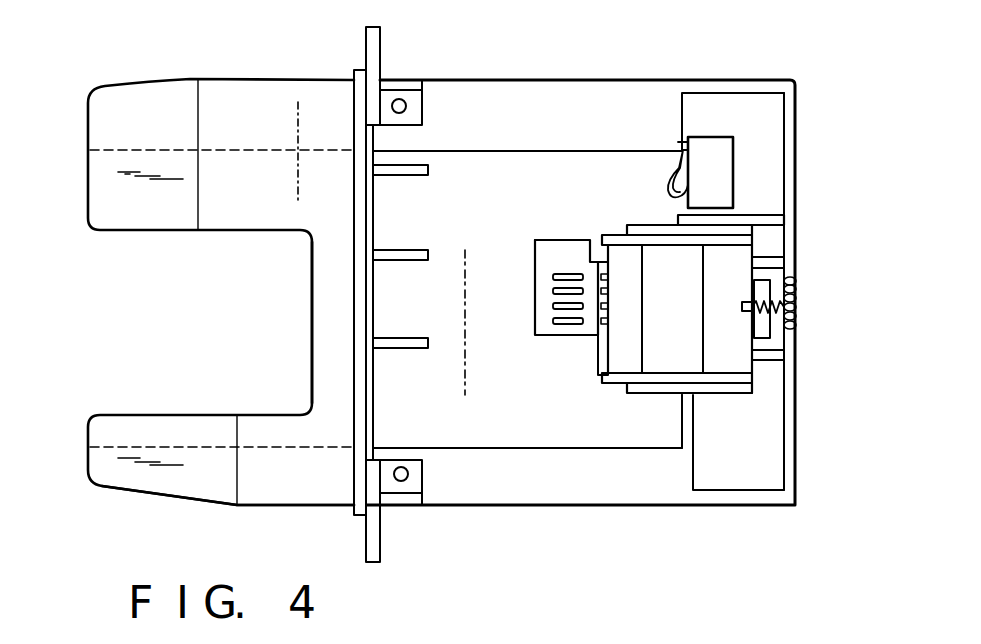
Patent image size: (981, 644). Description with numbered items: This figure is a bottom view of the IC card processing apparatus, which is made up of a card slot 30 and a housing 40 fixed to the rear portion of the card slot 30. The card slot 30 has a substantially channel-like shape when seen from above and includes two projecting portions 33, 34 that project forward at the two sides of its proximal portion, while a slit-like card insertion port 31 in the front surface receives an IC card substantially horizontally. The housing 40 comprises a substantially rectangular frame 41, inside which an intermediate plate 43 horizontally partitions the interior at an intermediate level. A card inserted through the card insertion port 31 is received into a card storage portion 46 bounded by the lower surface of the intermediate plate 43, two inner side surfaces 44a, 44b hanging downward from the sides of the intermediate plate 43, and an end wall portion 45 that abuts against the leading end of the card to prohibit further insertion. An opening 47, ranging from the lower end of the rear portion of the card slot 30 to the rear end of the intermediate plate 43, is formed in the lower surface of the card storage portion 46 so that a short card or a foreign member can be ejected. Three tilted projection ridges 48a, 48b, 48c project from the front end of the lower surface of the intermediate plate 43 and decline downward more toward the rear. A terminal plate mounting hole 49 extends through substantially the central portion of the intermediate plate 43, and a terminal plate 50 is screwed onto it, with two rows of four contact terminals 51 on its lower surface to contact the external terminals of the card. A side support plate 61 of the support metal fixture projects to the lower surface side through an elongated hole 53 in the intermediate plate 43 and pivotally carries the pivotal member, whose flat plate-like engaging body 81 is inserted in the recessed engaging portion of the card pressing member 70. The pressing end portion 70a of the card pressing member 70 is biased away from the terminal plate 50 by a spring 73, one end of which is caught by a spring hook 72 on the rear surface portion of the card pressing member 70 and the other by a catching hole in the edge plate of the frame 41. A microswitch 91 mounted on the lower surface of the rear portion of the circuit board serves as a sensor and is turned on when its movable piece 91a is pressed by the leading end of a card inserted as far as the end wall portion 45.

The card slot 30 is at (215, 70).
The card insertion port 31 is at (312, 337).
The projecting portion 33 is at (297, 95).
The projecting portion 34 is at (262, 493).
The housing 40 is at (634, 66).
The frame 41 is at (796, 207).
The intermediate plate 43 is at (603, 433).
The inner side surface 44a is at (534, 441).
The inner side surface 44b is at (551, 148).
The end wall portion 45 is at (681, 434).
The card storage portion 46 is at (458, 425).
The opening 47 is at (567, 437).
The tilted projection ridge 48a is at (418, 165).
The tilted projection ridge 48b is at (418, 250).
The tilted projection ridge 48c is at (413, 348).
The terminal plate mounting hole 49 is at (541, 251).
The terminal plate 50 is at (537, 287).
The contact terminals 51 is at (578, 270).
The elongated hole 53 is at (726, 225).
The side support plate 61 is at (657, 240).
The card pressing member 70 is at (748, 362).
The pressing end portion 70a is at (604, 364).
The spring hook 72 is at (743, 306).
The spring 73 is at (790, 323).
The engaging body 81 is at (770, 287).
The microswitch 91 is at (725, 165).
The movable piece 91a is at (688, 183).